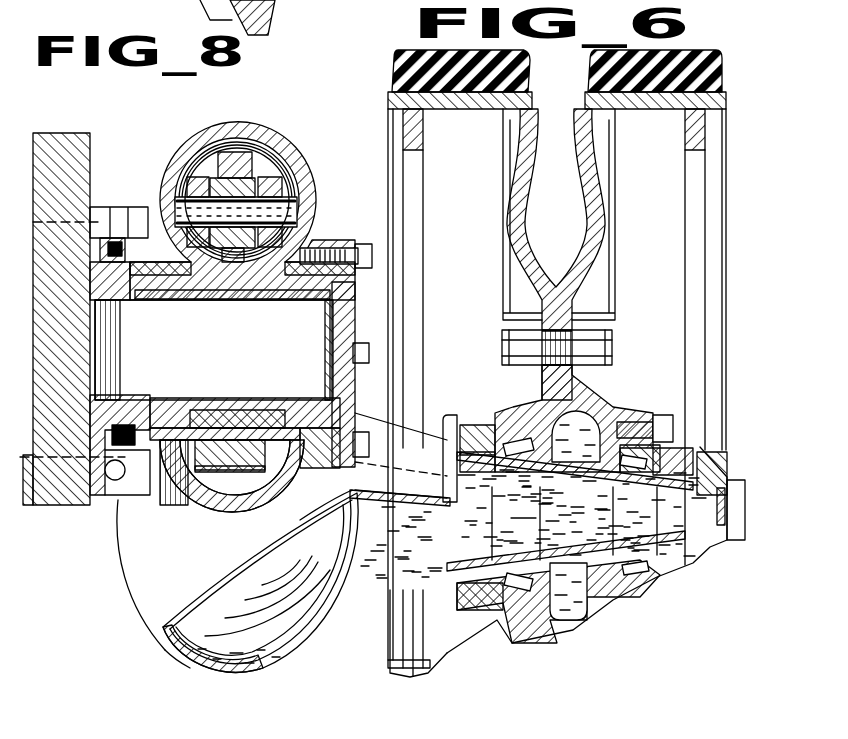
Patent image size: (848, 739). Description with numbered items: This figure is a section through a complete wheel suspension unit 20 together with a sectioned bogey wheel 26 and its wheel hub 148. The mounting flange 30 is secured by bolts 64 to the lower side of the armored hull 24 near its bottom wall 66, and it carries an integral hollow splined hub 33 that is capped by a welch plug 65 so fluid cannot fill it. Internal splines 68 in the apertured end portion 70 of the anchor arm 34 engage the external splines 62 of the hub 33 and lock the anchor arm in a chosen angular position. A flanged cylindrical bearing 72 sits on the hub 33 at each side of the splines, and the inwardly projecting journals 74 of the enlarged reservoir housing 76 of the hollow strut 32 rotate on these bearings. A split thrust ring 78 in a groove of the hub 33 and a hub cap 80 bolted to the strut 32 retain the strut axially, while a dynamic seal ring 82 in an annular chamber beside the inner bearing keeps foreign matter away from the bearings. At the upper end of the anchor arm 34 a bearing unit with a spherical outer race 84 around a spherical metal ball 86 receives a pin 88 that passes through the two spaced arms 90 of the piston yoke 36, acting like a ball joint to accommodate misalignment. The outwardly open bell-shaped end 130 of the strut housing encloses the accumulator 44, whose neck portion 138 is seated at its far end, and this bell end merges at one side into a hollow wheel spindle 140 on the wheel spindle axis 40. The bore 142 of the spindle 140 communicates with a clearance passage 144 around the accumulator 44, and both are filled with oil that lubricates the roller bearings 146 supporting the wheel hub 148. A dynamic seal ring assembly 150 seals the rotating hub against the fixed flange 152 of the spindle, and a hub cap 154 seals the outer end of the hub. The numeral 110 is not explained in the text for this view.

The wheel suspension unit 20 is at (311, 124).
The armored hull 24 is at (47, 133).
The bogey wheel 26 is at (722, 82).
The mounting flange 30 is at (112, 207).
The hollow strut 32 is at (268, 135).
The hub 33 is at (212, 350).
The anchor arm 34 is at (232, 152).
The piston yoke 36 is at (296, 190).
The wheel spindle axis 40 is at (732, 507).
The accumulator 44 is at (260, 582).
The external splines 62 is at (178, 300).
The bolts 64 is at (66, 212).
The welch plug 65 is at (345, 330).
The bottom wall 66 is at (50, 507).
The internal splines 68 is at (255, 395).
The apertured end portion 70 is at (258, 296).
The flanged cylindrical bearing 72 is at (148, 297).
The journals 74 is at (183, 425).
The reservoir housing 76 is at (225, 455).
The split thrust ring 78 is at (340, 290).
The hub cap 80 is at (350, 252).
The dynamic seal ring 82 is at (130, 420).
The spherical outer race 84 is at (207, 172).
The spherical metal ball 86 is at (276, 180).
The pin 88 is at (176, 202).
The yoke arms 90 is at (215, 172).
The member 110 is at (120, 0).
The bell-shaped end 130 is at (118, 568).
The neck portion 138 is at (205, 7).
The wheel spindle 140 is at (598, 600).
The spindle bore 142 is at (385, 600).
The clearance passage 144 is at (180, 653).
The roller bearings 146 is at (520, 470).
The wheel hub 148 is at (600, 400).
The dynamic seal ring assembly 150 is at (476, 428).
The fixed flange 152 is at (450, 418).
The hub cap 154 is at (722, 447).